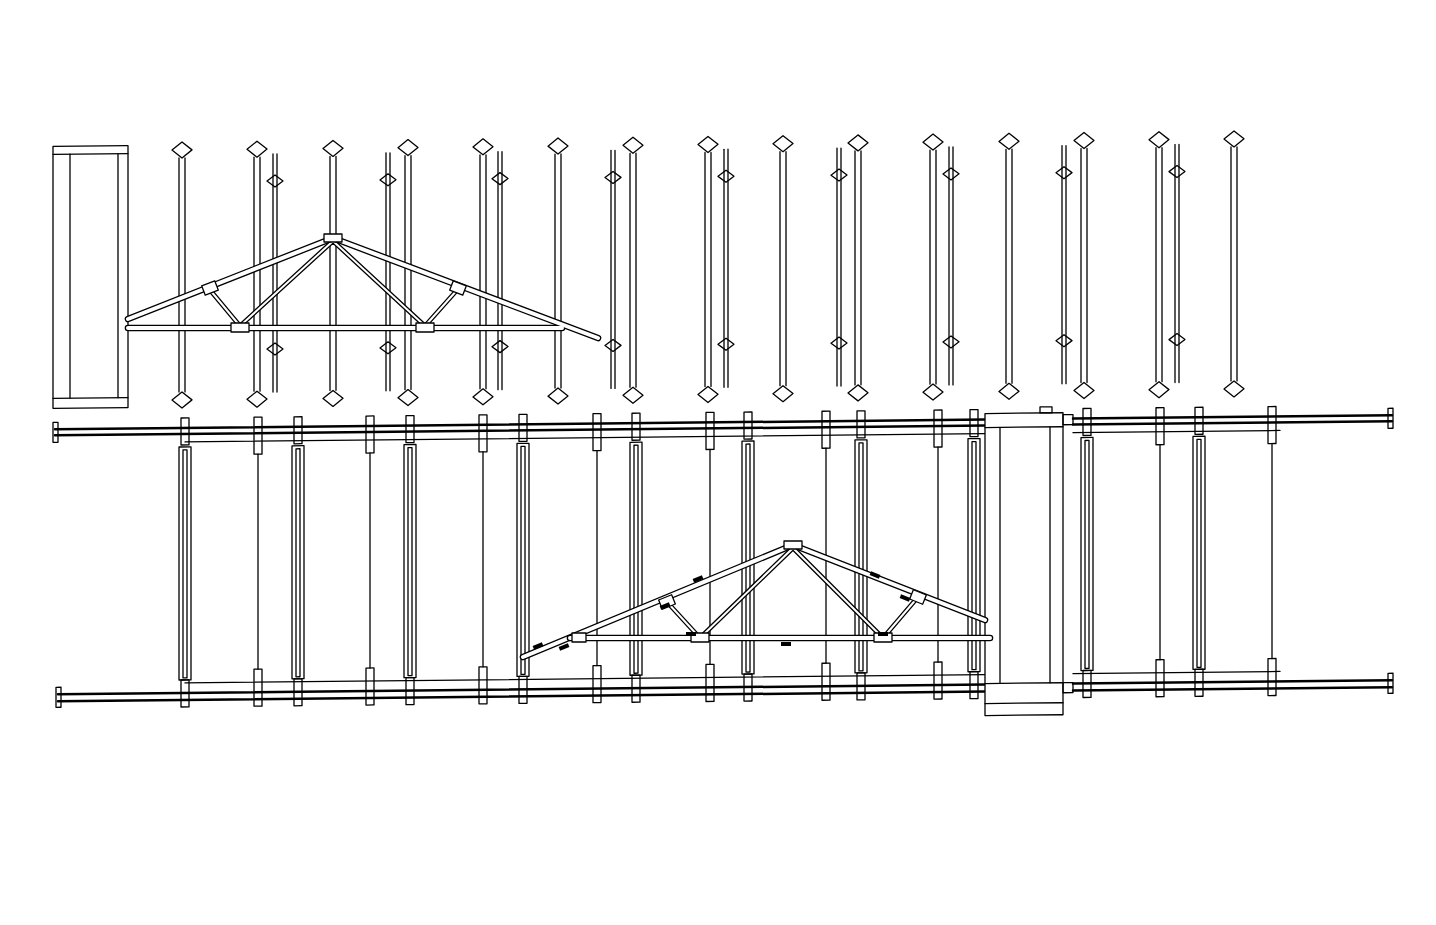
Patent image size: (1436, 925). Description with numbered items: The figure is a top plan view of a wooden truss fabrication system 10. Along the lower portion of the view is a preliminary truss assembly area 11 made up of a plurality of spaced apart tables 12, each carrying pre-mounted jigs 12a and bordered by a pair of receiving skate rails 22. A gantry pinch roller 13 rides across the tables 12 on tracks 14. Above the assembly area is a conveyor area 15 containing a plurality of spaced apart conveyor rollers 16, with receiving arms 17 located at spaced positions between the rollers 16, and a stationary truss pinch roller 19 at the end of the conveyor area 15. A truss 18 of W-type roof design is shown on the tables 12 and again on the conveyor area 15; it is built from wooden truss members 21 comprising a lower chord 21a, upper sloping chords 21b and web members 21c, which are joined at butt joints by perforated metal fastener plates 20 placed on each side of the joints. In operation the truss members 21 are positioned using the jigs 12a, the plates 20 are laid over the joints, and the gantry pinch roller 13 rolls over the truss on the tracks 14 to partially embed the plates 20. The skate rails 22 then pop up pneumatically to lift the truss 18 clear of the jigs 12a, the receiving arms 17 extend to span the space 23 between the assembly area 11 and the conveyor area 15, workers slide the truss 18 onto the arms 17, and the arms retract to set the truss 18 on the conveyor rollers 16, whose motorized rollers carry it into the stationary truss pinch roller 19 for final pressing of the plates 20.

The wooden truss fabrication system 10 is at (746, 102).
The preliminary truss assembly area 11 is at (1344, 556).
The tables 12 is at (219, 668).
The jigs 12a is at (543, 636).
The gantry pinch roller 13 is at (1030, 660).
The tracks 14 is at (1334, 422).
The conveyor area 15 is at (1324, 248).
The conveyor rollers 16 is at (787, 200).
The receiving arms 17 is at (388, 203).
The truss 18 is at (317, 350).
The stationary truss pinch roller 19 is at (95, 172).
The perforated metal fastener plates 20 is at (210, 286).
The wooden truss members 21 is at (915, 643).
The lower chord 21a is at (780, 643).
The upper sloping chords 21b is at (620, 612).
The web members 21c is at (773, 558).
The receiving skate rails 22 is at (300, 517).
The space 23 is at (1268, 392).